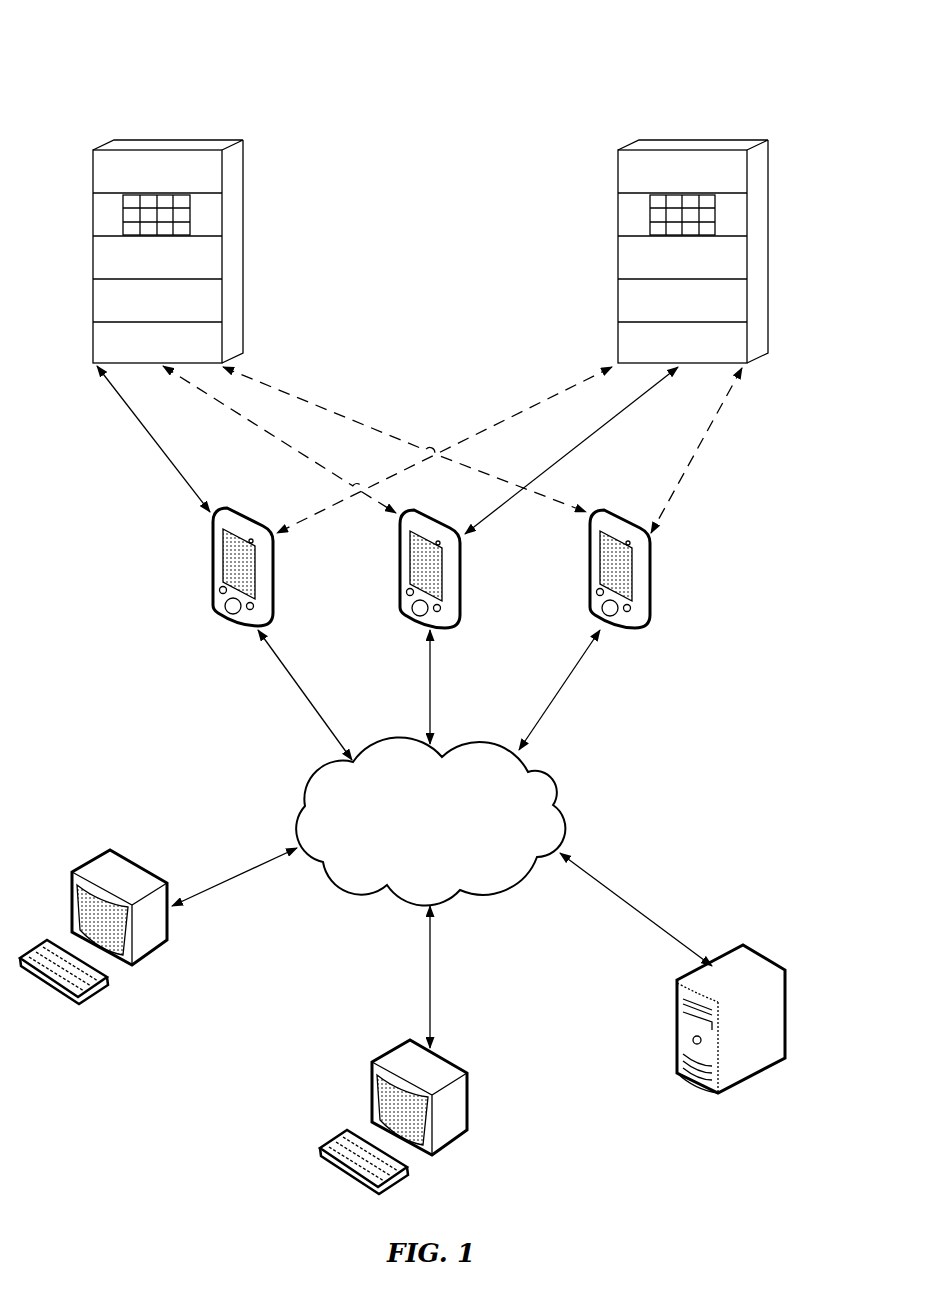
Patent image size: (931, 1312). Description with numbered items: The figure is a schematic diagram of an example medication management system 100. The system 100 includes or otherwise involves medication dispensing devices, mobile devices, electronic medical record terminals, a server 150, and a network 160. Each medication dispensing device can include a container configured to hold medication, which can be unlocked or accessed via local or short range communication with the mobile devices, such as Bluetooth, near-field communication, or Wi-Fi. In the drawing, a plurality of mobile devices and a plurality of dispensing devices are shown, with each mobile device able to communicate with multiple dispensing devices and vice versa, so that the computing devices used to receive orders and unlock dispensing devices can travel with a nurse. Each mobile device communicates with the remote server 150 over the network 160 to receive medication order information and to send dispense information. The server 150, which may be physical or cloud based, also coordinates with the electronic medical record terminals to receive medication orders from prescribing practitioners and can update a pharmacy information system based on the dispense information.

The medication management system 100 is at (126, 78).
The server 150 is at (786, 1015).
The network 160 is at (560, 797).